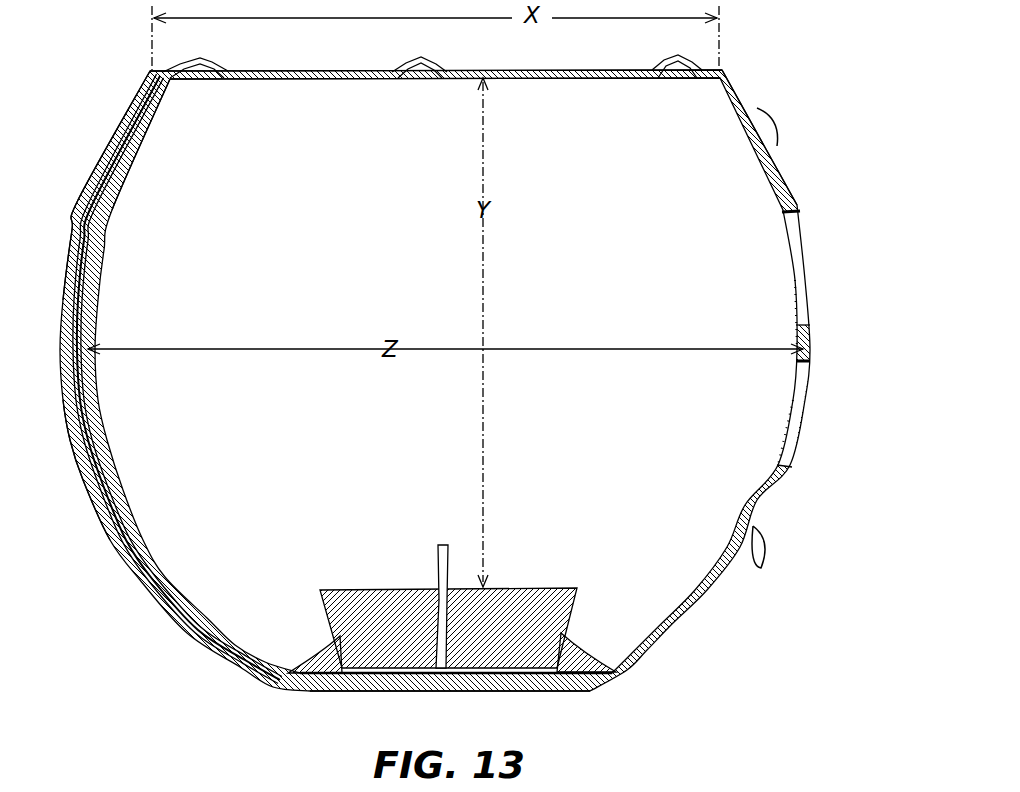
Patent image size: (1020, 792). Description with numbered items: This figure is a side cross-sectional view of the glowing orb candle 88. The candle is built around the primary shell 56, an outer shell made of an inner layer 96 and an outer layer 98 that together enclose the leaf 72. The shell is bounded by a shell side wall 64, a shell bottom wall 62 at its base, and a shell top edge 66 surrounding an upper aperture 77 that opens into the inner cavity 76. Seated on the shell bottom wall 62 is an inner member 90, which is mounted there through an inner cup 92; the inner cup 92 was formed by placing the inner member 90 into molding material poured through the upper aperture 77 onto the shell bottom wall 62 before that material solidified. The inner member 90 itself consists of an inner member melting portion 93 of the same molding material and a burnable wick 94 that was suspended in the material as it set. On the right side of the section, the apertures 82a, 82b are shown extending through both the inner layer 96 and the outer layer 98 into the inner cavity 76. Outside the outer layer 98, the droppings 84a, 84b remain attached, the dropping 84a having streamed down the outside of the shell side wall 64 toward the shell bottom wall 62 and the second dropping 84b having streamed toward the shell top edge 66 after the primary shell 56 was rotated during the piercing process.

The glowing orb candle 88 is at (106, 99).
The inner layer 96 is at (114, 163).
The outer layer 98 is at (86, 178).
The shell top edge 66 is at (292, 70).
The upper aperture 77 is at (350, 104).
The inner cavity 76 is at (510, 100).
The primary shell 56 is at (727, 68).
The second dropping 84b is at (779, 137).
The aperture 82b is at (806, 282).
The aperture 82a is at (806, 420).
The dropping 84a is at (776, 548).
The leaf 72 is at (80, 456).
The shell side wall 64 is at (124, 545).
The inner member melting portion 93 is at (245, 672).
The shell bottom wall 62 is at (462, 692).
The inner cup 92 is at (600, 642).
The inner member 90 is at (528, 590).
The burnable wick 94 is at (437, 558).